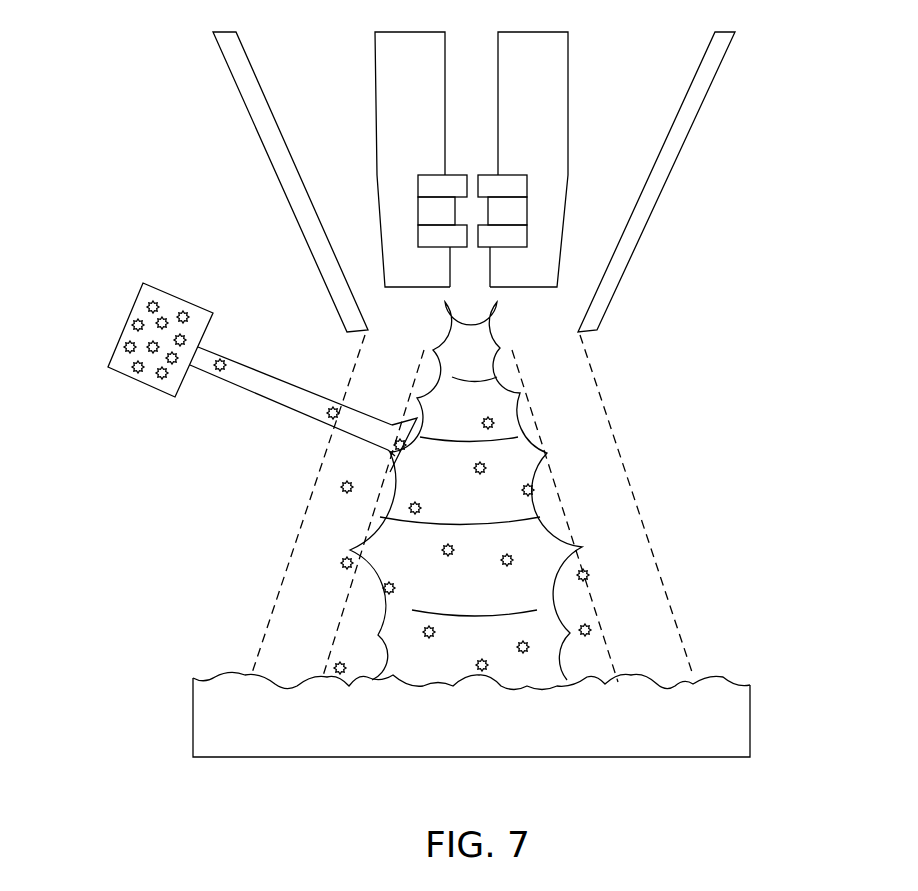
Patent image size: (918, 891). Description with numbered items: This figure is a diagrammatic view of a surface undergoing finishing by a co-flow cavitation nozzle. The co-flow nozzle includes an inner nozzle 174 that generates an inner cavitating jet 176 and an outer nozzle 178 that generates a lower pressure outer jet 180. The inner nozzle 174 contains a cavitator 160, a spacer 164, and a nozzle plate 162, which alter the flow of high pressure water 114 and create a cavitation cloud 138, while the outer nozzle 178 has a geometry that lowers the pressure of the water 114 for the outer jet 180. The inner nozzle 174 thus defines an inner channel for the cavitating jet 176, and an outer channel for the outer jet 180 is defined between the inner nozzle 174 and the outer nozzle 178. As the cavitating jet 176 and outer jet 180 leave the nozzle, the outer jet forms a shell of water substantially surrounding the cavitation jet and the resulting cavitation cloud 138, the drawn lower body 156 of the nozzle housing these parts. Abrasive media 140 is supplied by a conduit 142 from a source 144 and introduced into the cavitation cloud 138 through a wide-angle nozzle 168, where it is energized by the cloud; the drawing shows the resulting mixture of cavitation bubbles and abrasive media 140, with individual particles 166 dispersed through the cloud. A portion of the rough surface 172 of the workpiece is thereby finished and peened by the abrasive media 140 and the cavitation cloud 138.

The high pressure water 114 is at (483, 90).
The inner nozzle 174 is at (555, 102).
The outer nozzle 178 is at (682, 150).
The spacer 164 is at (423, 215).
The nozzle plate 162 is at (422, 240).
The cavitator 160 is at (513, 188).
The housing 156 is at (542, 260).
The outer jet 180 is at (411, 330).
The inner cavitating jet 176 is at (485, 330).
The abrasive media 140 is at (162, 320).
The source 144 is at (128, 323).
The conduit 142 is at (228, 382).
The wide-angle nozzle 168 is at (393, 447).
The cavitation cloud 138 is at (575, 488).
The particles 166 is at (593, 633).
The rough surface 172 is at (735, 698).